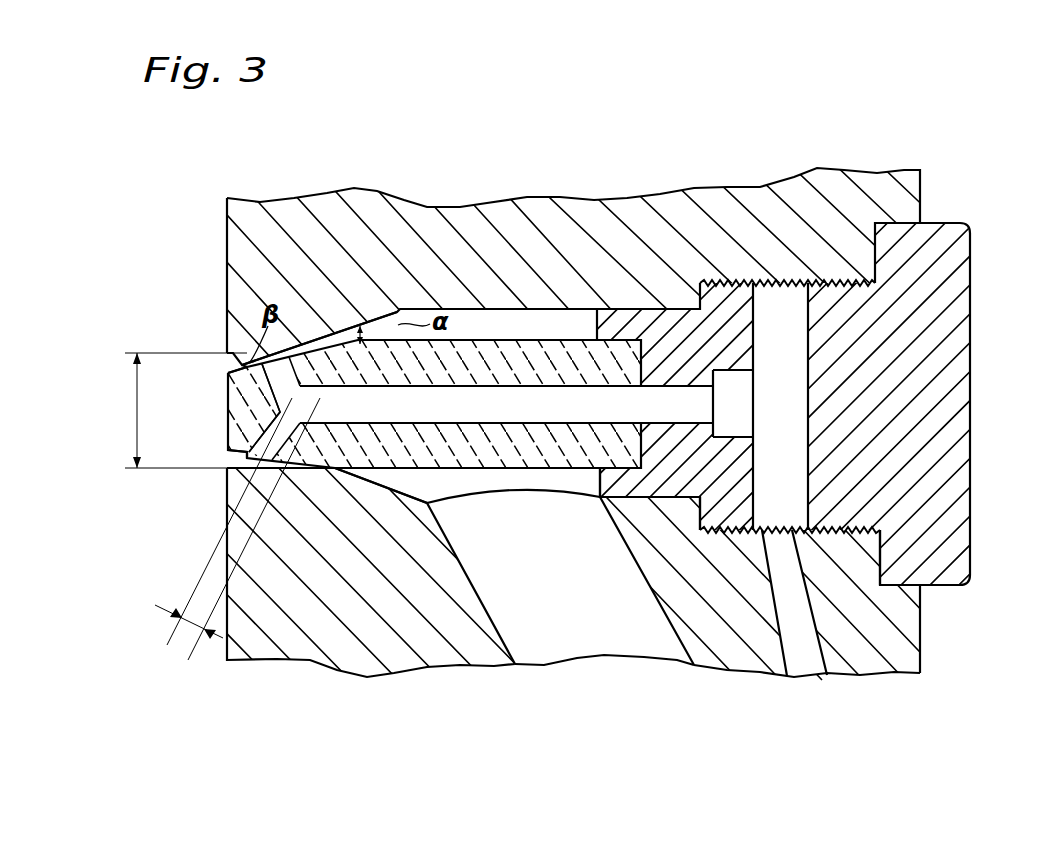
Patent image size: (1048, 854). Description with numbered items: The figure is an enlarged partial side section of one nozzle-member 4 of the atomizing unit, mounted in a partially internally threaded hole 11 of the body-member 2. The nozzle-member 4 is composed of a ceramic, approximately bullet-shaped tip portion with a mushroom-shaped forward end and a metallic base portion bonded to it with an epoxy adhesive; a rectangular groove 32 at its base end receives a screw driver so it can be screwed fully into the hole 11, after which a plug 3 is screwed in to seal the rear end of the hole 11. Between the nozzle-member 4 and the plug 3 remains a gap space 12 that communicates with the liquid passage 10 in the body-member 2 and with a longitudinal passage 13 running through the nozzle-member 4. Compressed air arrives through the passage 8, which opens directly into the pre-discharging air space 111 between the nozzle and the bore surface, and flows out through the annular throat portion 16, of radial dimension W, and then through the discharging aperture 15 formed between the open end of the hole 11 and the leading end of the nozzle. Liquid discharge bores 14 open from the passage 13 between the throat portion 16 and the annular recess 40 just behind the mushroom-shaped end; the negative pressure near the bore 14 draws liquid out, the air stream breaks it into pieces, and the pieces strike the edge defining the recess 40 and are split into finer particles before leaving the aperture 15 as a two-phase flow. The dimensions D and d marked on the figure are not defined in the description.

The body-member 2 is at (920, 180).
The plug 3 is at (973, 253).
The nozzle-member 4 is at (648, 328).
The compressed air passage 8 is at (560, 577).
The liquid passage 10 is at (800, 637).
The hole 11 is at (592, 318).
The pre-discharging air space 111 is at (500, 318).
The gap space 12 is at (777, 320).
The longitudinal passage 13 is at (506, 404).
The liquid discharge bore 14 is at (276, 387).
The discharging aperture 15 is at (230, 358).
The annular throat portion 16 is at (372, 322).
The rectangular groove 32 is at (733, 382).
The annular recess 40 is at (247, 364).
The outlet diameter D is at (185, 410).
The gap width d is at (237, 529).
The radial dimension W is at (362, 350).